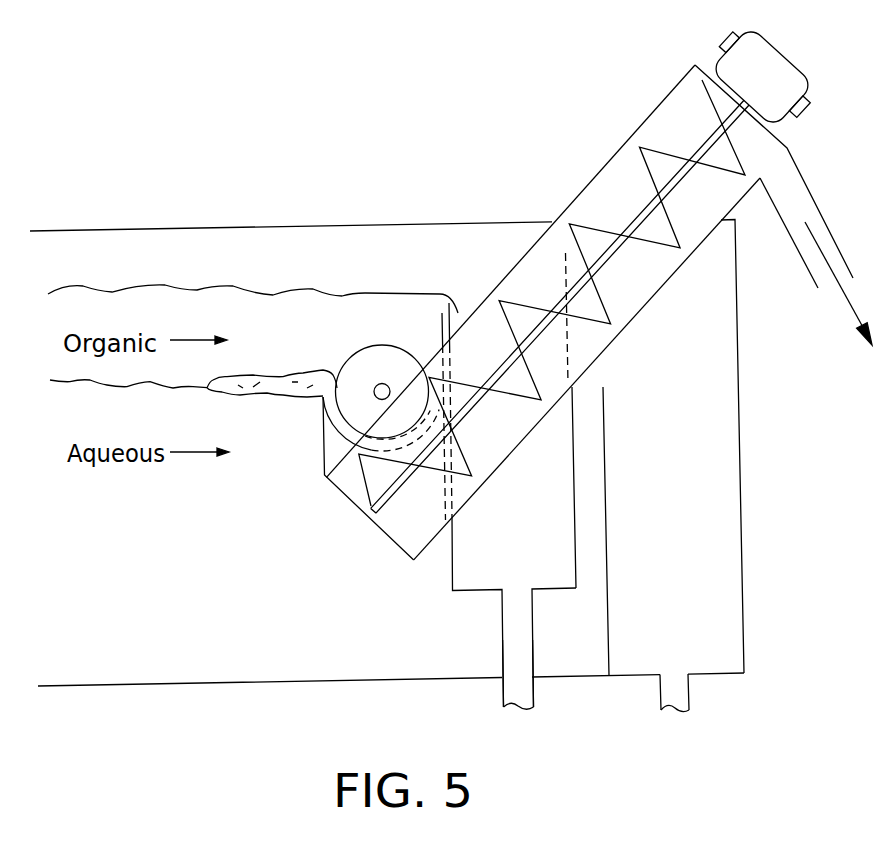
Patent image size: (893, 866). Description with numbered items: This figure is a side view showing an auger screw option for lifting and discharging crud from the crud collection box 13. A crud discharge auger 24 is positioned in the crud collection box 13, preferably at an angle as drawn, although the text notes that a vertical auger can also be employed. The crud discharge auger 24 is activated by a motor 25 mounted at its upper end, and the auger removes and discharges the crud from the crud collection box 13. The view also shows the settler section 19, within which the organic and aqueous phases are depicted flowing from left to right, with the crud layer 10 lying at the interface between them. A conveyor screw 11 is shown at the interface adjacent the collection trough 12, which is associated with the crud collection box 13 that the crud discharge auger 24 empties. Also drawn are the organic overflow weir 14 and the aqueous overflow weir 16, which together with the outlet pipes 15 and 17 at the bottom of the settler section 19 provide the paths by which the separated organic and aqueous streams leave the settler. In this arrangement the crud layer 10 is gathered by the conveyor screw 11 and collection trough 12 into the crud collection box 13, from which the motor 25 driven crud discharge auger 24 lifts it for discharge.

The crud layer 10 is at (280, 397).
The conveyor screw 11 is at (370, 346).
The collection trough 12 is at (441, 330).
The crud collection box 13 is at (382, 531).
The organic overflow weir 14 is at (457, 314).
The outlet pipe 15 is at (503, 698).
The aqueous overflow weir 16 is at (607, 530).
The outlet pipe 17 is at (662, 698).
The settler section 19 is at (737, 393).
The crud discharge auger 24 is at (645, 150).
The motor 25 is at (795, 64).